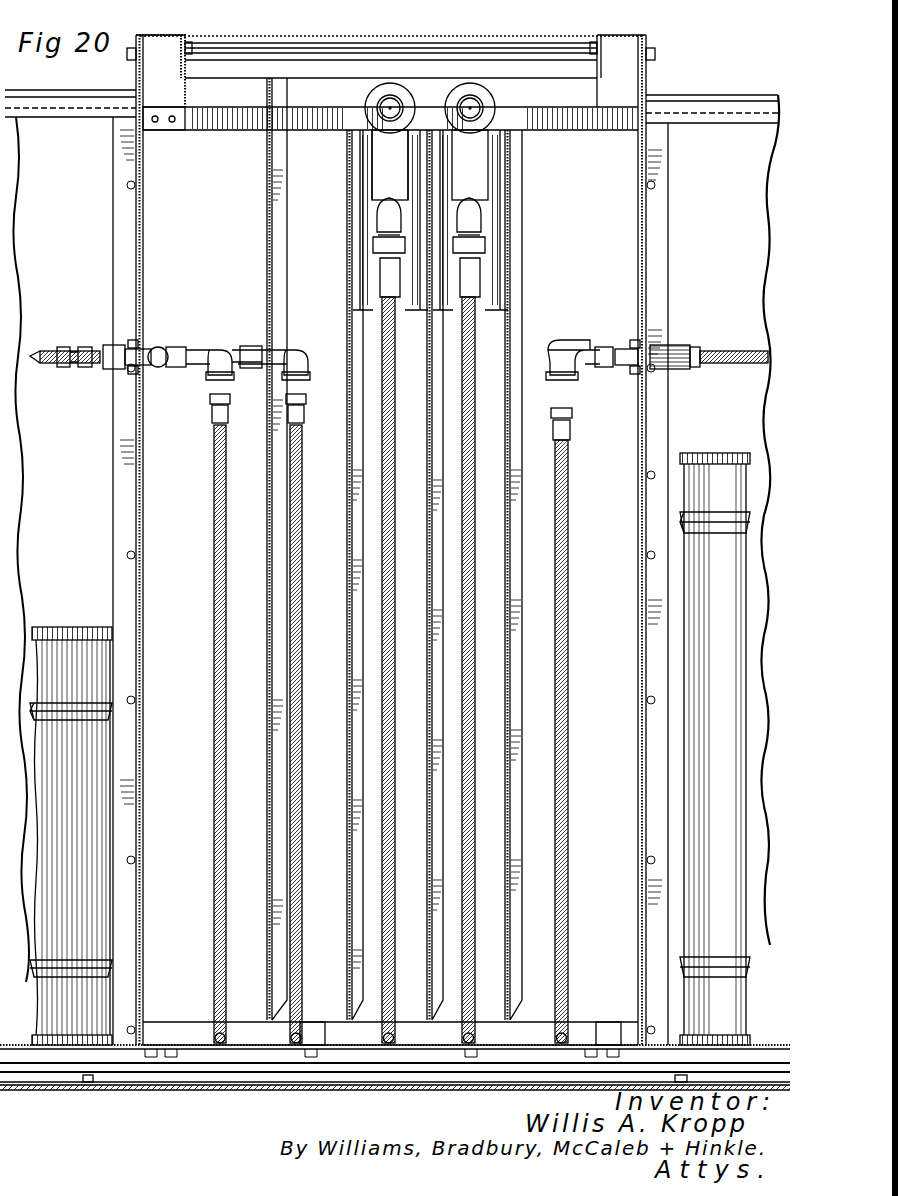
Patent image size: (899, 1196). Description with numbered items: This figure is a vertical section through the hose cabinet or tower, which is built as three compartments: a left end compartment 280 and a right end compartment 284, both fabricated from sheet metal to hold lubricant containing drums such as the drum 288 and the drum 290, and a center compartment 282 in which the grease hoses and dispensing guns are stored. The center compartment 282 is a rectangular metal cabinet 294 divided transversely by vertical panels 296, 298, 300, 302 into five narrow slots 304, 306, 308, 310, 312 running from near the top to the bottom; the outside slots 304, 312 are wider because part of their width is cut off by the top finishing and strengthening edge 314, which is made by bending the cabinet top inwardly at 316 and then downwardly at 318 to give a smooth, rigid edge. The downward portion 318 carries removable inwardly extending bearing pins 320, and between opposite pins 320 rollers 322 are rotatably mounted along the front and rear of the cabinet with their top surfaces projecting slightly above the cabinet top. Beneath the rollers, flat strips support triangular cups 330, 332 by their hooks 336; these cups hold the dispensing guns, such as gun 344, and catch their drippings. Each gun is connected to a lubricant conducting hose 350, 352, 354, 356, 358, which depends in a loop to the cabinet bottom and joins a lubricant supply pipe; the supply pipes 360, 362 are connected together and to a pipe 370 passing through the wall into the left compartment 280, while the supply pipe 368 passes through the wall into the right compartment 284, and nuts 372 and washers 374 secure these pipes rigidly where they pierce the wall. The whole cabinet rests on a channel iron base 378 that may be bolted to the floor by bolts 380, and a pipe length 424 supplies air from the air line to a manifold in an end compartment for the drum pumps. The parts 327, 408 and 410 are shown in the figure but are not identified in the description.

The end compartment 280 is at (76, 127).
The center compartment 282 is at (556, 84).
The end compartment 284 is at (734, 133).
The lubricant containing drum 288 is at (84, 627).
The lubricant containing drum 290 is at (718, 438).
The rectangular metal cabinet 294 is at (150, 258).
The vertical panel 296 is at (270, 270).
The vertical panel 298 is at (360, 284).
The vertical panel 300 is at (390, 322).
The vertical panel 302 is at (510, 310).
The slot 304 is at (178, 478).
The slot 306 is at (310, 592).
The slot 308 is at (405, 1000).
The slot 310 is at (487, 1005).
The slot 312 is at (640, 305).
The top finishing and strengthening edge 314 is at (144, 30).
The inwardly bent portion 316 is at (187, 40).
The downwardly extending portion 318 is at (210, 70).
The bearing pin 320 is at (192, 50).
The roller 322 is at (330, 47).
The cross plate 327 is at (247, 118).
The triangular cup 330 is at (364, 264).
The triangular cup 332 is at (493, 202).
The hook 336 is at (366, 110).
The lubricant dispensing gun 344 is at (482, 165).
The lubricant conducting hose 350 is at (213, 528).
The lubricant conducting hose 352 is at (293, 562).
The lubricant conducting hose 354 is at (397, 300).
The lubricant conducting hose 356 is at (476, 333).
The lubricant conducting hose 358 is at (566, 485).
The lubricant supply pipe 360 is at (200, 358).
The lubricant supply pipe 362 is at (255, 350).
The lubricant supply pipe 368 is at (620, 378).
The pipe 370 is at (112, 345).
The nut 372 is at (380, 160).
The washer 374 is at (142, 350).
The base 378 is at (195, 1046).
The bolt 380 is at (90, 1083).
The supply pipe 408 is at (55, 355).
The supply pipe 410 is at (730, 355).
The pipe length 424 is at (257, 1068).